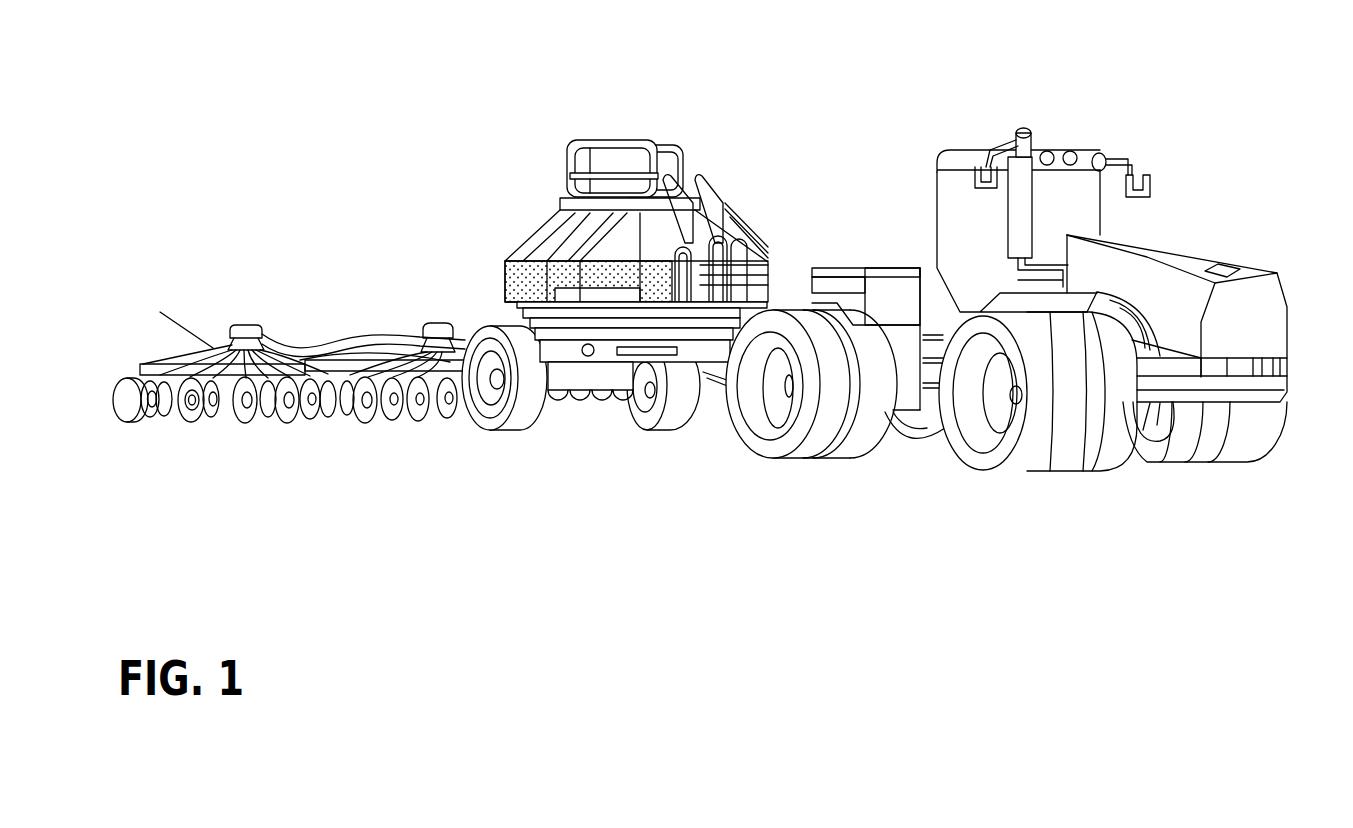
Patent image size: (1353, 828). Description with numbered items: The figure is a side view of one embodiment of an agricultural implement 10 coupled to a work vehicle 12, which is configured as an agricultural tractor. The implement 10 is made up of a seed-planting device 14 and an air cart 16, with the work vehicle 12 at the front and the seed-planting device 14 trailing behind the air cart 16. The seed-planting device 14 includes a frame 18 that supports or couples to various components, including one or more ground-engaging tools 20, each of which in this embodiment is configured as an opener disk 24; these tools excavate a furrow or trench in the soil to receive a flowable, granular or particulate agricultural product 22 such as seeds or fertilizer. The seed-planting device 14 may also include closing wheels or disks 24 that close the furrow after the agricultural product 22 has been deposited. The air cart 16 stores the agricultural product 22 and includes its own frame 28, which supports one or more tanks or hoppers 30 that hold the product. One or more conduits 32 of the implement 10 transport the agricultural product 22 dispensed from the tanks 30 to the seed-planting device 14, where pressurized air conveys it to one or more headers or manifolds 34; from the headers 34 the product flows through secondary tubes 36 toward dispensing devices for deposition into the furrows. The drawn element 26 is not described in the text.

The agricultural implement 10 is at (201, 198).
The work vehicle 12 is at (1160, 162).
The seed-planting device 14 is at (334, 233).
The air cart 16 is at (608, 126).
The frame 18 is at (363, 358).
The ground-engaging tools 20 is at (413, 421).
The agricultural product 22 is at (517, 284).
The opener disk 24 is at (247, 410).
The end wheel / press wheel 26 is at (145, 420).
The frame 28 is at (638, 353).
The tanks or hoppers 30 is at (558, 230).
The conduits 32 is at (467, 335).
The headers or manifolds 34 is at (243, 322).
The secondary tubes 36 is at (177, 360).